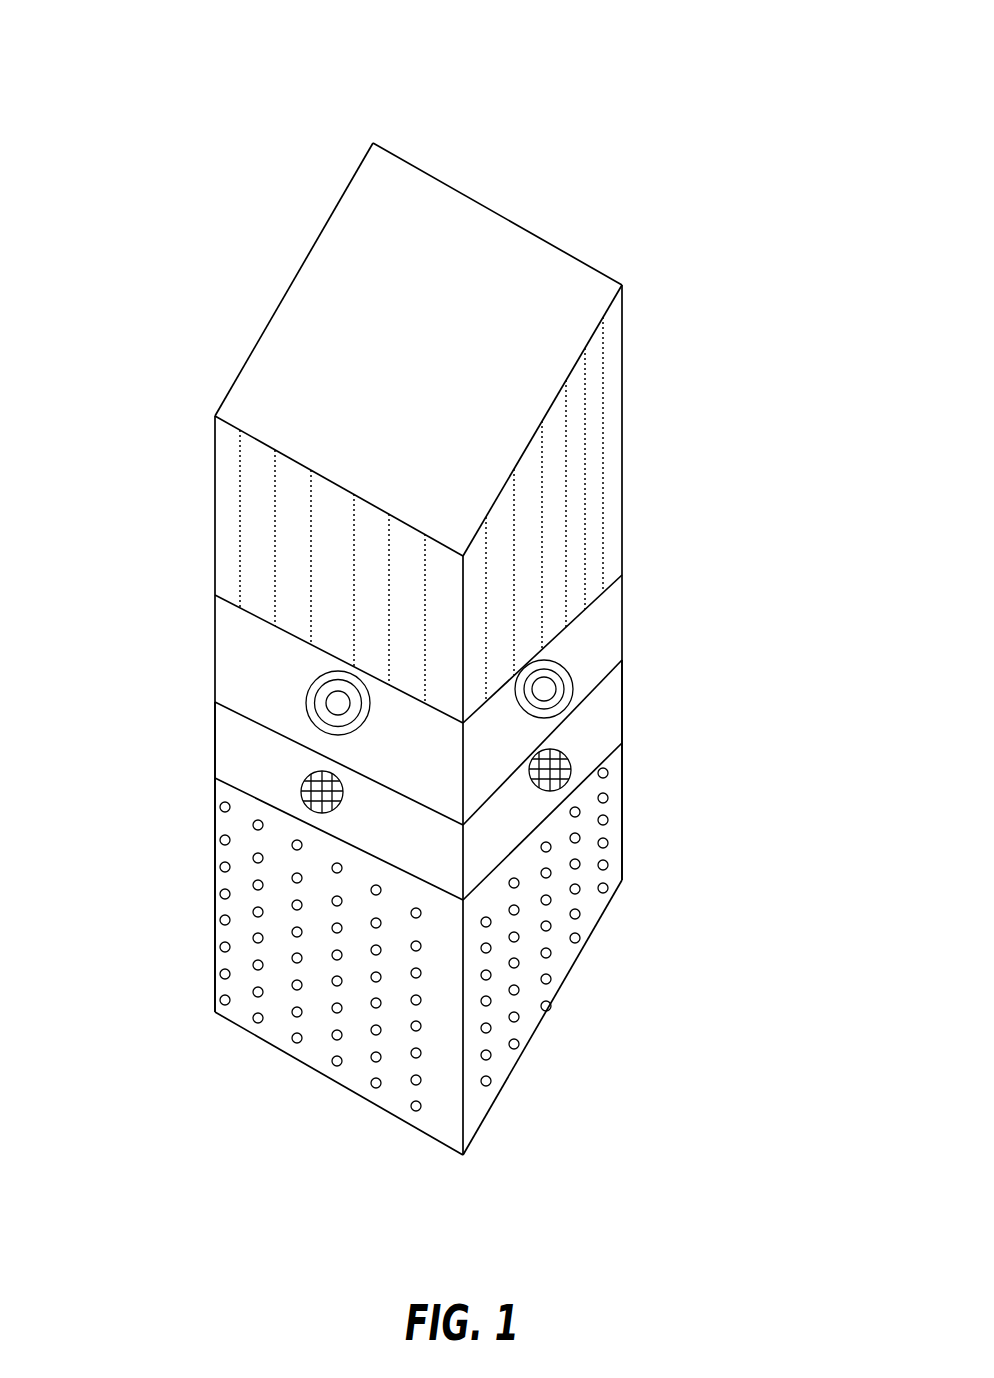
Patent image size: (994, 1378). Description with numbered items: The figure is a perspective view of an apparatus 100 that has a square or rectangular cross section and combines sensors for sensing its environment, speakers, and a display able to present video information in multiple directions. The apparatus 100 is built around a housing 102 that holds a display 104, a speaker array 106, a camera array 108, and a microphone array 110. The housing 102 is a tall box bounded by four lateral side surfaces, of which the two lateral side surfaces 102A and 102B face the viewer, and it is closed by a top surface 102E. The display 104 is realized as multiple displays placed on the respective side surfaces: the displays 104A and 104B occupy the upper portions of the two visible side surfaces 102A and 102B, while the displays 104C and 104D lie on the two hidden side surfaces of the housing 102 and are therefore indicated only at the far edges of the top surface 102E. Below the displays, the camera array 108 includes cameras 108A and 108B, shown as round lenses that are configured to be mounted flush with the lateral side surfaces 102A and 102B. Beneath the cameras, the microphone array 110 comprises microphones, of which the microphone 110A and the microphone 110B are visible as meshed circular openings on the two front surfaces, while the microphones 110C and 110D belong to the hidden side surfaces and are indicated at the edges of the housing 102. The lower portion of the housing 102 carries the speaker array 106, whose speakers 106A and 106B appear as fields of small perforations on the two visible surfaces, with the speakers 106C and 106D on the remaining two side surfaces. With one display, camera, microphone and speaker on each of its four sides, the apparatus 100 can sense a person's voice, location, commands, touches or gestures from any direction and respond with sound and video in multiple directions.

The apparatus 100 is at (476, 36).
The housing 102 is at (634, 380).
The lateral side surface 102A is at (223, 462).
The lateral side surface 102B is at (566, 450).
The top surface 102E is at (392, 293).
The display 104 is at (478, 575).
The display 104A is at (275, 515).
The display 104B is at (566, 545).
The display 104C is at (537, 230).
The display 104D is at (312, 236).
The speaker array 106 is at (475, 894).
The speaker 106A is at (258, 885).
The speaker 106B is at (518, 990).
The speaker 106C is at (622, 845).
The speaker 106D is at (216, 962).
The camera array 108 is at (634, 604).
The camera 108A is at (308, 687).
The camera 108B is at (557, 667).
The microphone array 110 is at (633, 704).
The microphone 110A is at (302, 790).
The microphone 110B is at (555, 770).
The microphone 110C is at (622, 728).
The microphone 110D is at (216, 758).